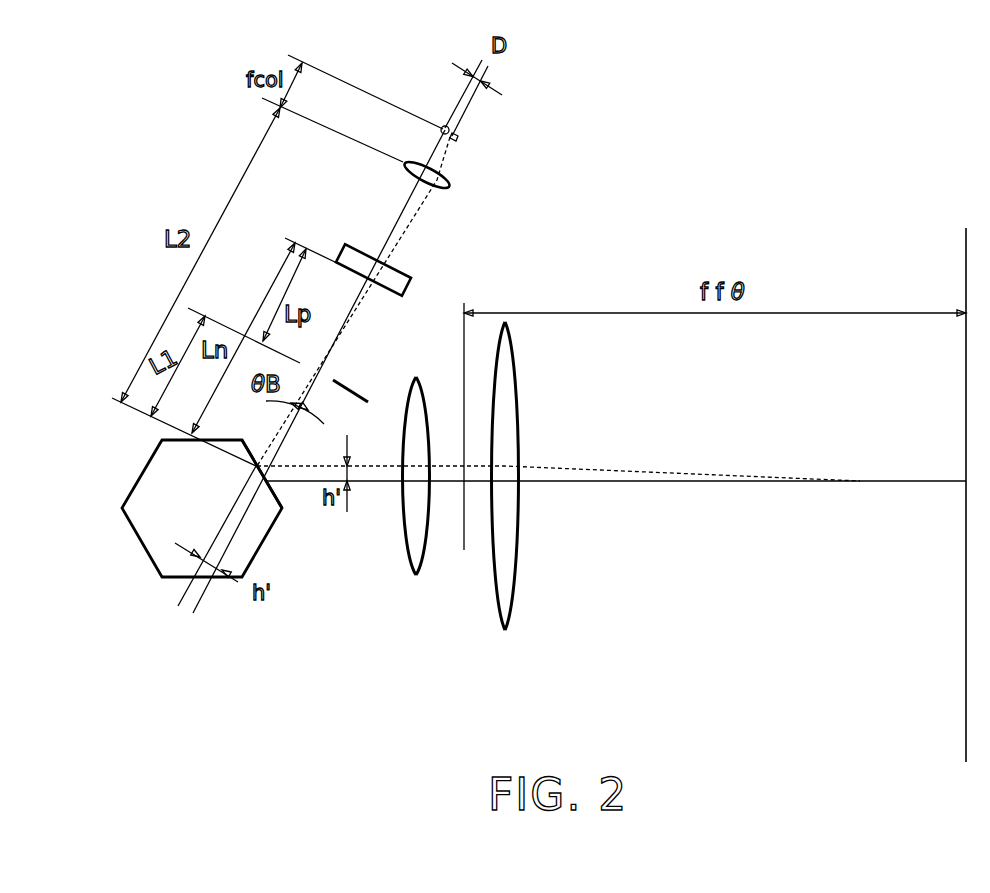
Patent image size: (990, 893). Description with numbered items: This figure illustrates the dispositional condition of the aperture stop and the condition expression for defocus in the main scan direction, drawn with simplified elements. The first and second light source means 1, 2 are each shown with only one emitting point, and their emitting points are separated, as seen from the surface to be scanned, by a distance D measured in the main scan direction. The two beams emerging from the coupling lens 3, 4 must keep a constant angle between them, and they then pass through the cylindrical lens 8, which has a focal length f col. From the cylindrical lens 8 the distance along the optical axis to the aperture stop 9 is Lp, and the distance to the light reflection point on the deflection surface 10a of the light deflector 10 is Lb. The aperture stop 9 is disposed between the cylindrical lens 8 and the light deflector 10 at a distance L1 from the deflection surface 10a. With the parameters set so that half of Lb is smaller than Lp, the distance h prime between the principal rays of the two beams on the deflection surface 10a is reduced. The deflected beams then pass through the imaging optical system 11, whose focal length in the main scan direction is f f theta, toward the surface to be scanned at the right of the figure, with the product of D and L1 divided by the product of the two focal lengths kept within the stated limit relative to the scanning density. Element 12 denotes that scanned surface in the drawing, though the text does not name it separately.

The first light source means 1 is at (458, 136).
The second light source means 2 is at (443, 127).
The coupling lens 3 is at (463, 199).
The coupling lens 4 is at (452, 186).
The cylindrical lens 8 is at (344, 242).
The aperture stop 9 is at (350, 386).
The light deflector 10 is at (199, 521).
The deflection surface 10a is at (282, 495).
The imaging optical system 11 is at (523, 645).
The scanned surface 12 is at (965, 255).